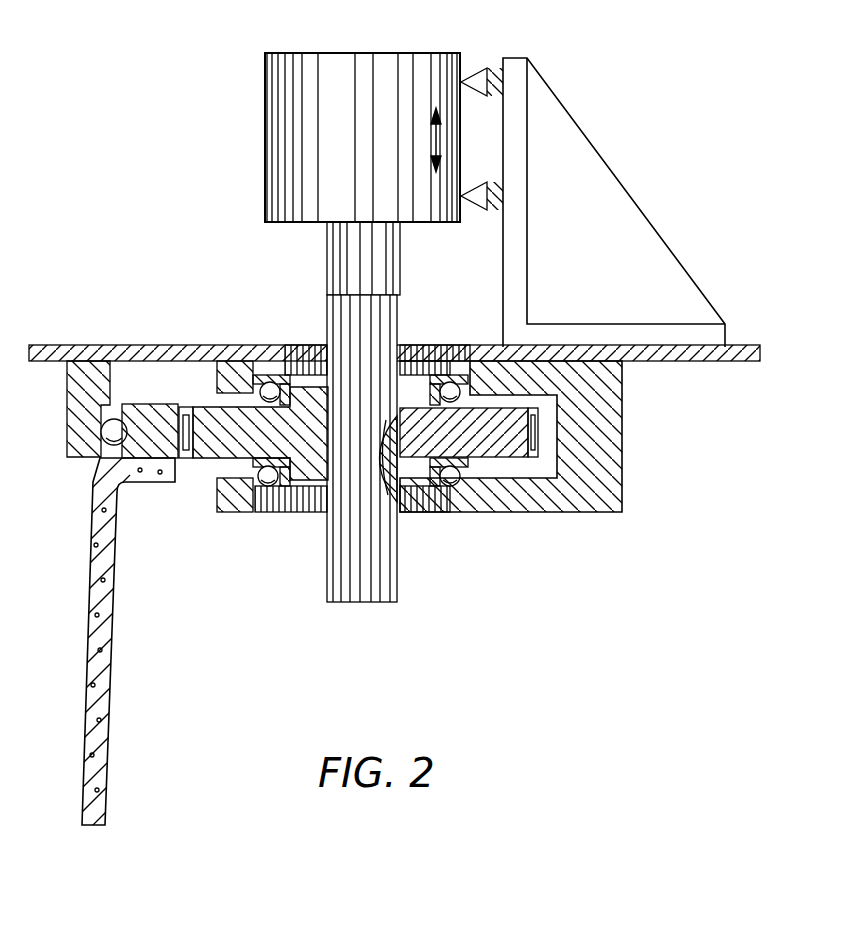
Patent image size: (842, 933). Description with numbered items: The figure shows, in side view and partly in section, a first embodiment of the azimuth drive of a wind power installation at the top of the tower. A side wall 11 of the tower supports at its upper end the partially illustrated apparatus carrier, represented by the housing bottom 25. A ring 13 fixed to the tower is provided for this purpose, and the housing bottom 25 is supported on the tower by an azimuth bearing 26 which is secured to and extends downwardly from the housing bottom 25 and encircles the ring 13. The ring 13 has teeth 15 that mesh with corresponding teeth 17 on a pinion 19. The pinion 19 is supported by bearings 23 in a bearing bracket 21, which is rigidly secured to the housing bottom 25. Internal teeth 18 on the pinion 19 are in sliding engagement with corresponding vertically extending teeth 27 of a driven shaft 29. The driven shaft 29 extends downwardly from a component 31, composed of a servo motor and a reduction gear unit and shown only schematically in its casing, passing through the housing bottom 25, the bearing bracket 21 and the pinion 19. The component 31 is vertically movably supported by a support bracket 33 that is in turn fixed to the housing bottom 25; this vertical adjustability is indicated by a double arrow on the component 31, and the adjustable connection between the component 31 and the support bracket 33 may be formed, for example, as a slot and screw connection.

The side wall 11 is at (116, 578).
The ring 13 is at (150, 410).
The teeth 15 is at (184, 410).
The teeth 17 is at (540, 440).
The internal teeth 18 is at (403, 446).
The pinion 19 is at (508, 446).
The bearing bracket 21 is at (620, 437).
The bearings 23 is at (262, 384).
The housing bottom 25 is at (135, 349).
The azimuth bearing 26 is at (68, 402).
The teeth 27 is at (330, 572).
The driven shaft 29 is at (330, 258).
The component 31 is at (371, 66).
The support bracket 33 is at (572, 121).